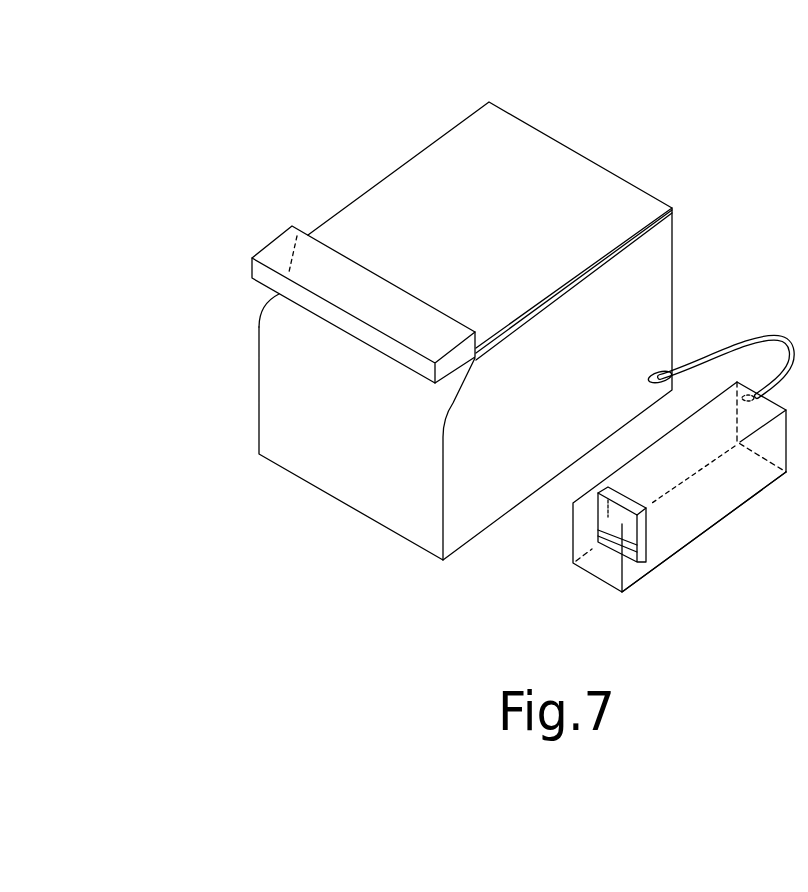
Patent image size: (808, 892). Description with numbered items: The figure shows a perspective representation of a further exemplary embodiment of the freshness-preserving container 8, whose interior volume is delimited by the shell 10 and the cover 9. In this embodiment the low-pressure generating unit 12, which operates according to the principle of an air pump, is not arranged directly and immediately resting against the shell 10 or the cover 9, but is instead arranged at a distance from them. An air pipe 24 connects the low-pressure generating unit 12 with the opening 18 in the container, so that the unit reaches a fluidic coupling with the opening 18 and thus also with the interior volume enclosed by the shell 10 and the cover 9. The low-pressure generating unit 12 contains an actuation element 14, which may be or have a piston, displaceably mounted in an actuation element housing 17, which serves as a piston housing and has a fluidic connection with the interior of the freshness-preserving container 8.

The freshness-preserving container 8 is at (365, 168).
The cover 9 is at (528, 167).
The shell 10 is at (250, 368).
The low-pressure generating unit 12 is at (652, 582).
The actuation element 14 is at (715, 465).
The actuation element housing 17 is at (683, 520).
The opening 18 is at (658, 363).
The air pipe 24 is at (767, 337).